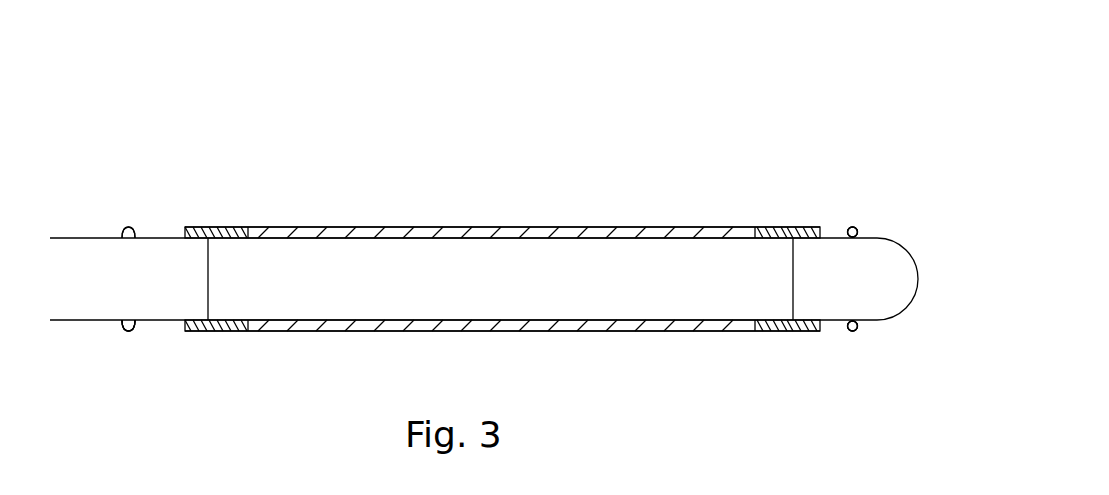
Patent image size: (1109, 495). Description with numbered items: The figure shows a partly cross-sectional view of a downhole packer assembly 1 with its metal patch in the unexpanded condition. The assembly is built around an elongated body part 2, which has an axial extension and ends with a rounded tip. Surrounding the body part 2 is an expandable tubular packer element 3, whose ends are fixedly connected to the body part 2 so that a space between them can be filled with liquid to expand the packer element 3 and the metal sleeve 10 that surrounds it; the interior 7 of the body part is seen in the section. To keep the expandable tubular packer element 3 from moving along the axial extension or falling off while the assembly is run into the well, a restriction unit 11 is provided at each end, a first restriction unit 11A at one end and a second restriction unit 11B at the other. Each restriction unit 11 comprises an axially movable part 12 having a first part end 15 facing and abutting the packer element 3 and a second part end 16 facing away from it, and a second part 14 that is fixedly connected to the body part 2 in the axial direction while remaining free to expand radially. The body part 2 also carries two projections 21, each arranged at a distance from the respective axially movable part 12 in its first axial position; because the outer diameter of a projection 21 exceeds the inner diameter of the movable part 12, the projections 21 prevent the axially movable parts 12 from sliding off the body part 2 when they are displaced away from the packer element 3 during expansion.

The downhole packer assembly 1 is at (106, 102).
The body part 2 is at (64, 250).
The expandable tubular packer element 3 is at (525, 260).
The lumen 7 is at (302, 265).
The metal sleeve 10 is at (450, 236).
The restriction unit 11 is at (132, 229).
The first restriction unit 11A is at (785, 235).
The second restriction unit 11B is at (124, 229).
The axially movable part 12 is at (196, 227).
The second part 14 is at (853, 227).
The first part end 15 is at (243, 332).
The second part end 16 is at (186, 332).
The projection 21 is at (124, 333).